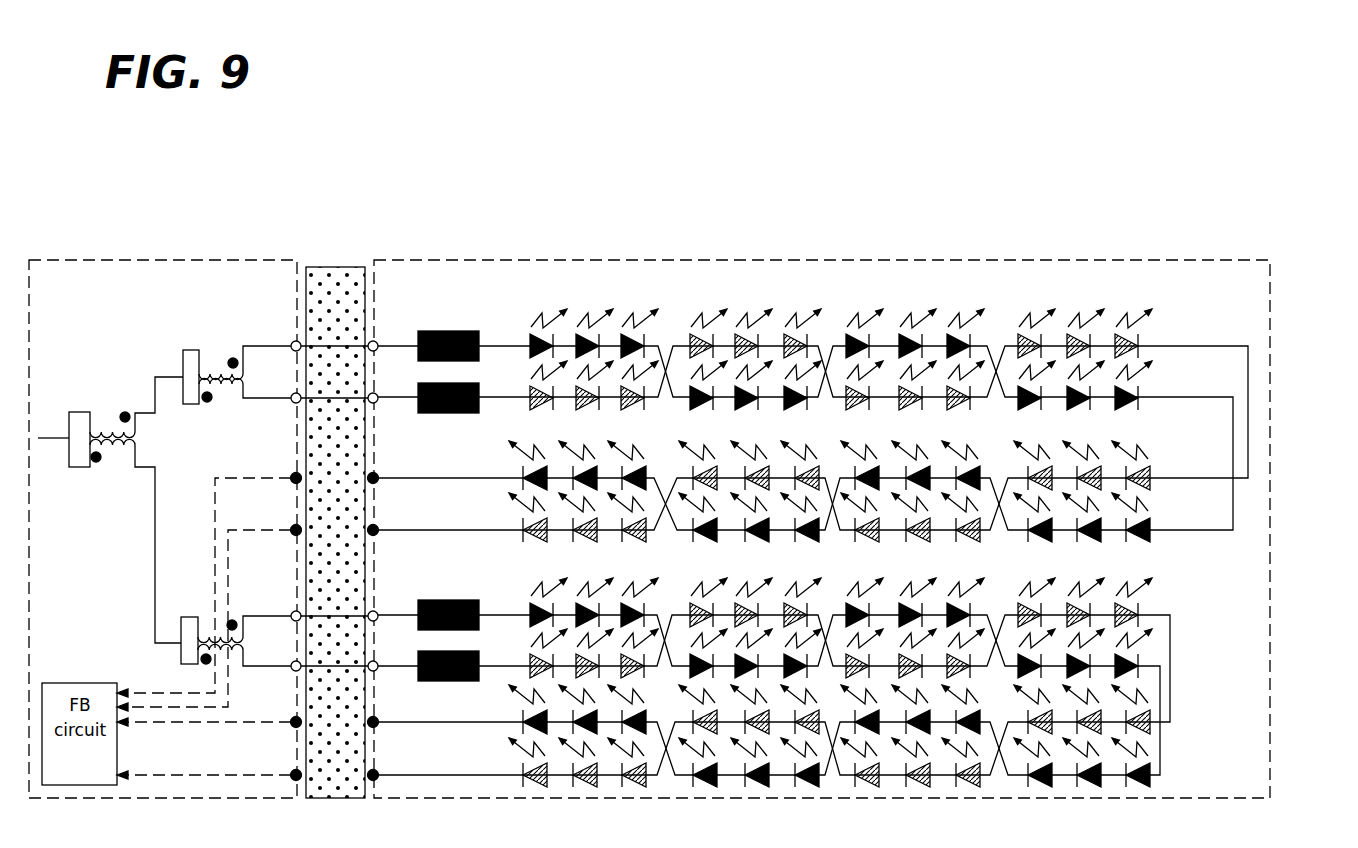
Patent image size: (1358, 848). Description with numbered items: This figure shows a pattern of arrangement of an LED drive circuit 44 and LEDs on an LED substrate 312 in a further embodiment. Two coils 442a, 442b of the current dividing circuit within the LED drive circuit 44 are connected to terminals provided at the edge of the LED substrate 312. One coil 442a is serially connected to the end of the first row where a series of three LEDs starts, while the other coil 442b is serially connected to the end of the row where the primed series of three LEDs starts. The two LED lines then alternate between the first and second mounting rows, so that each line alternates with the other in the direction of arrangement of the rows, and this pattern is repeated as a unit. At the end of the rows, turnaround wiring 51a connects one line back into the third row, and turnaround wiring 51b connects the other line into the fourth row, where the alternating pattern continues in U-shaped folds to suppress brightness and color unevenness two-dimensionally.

The LED drive circuit 44 is at (110, 260).
The LED substrate 312 is at (467, 260).
The coil of current dividing circuit 442a is at (219, 352).
The coil of current dividing circuit 442b is at (220, 405).
The turnaround wiring 51a is at (856, 409).
The turnaround wiring 51b is at (858, 457).